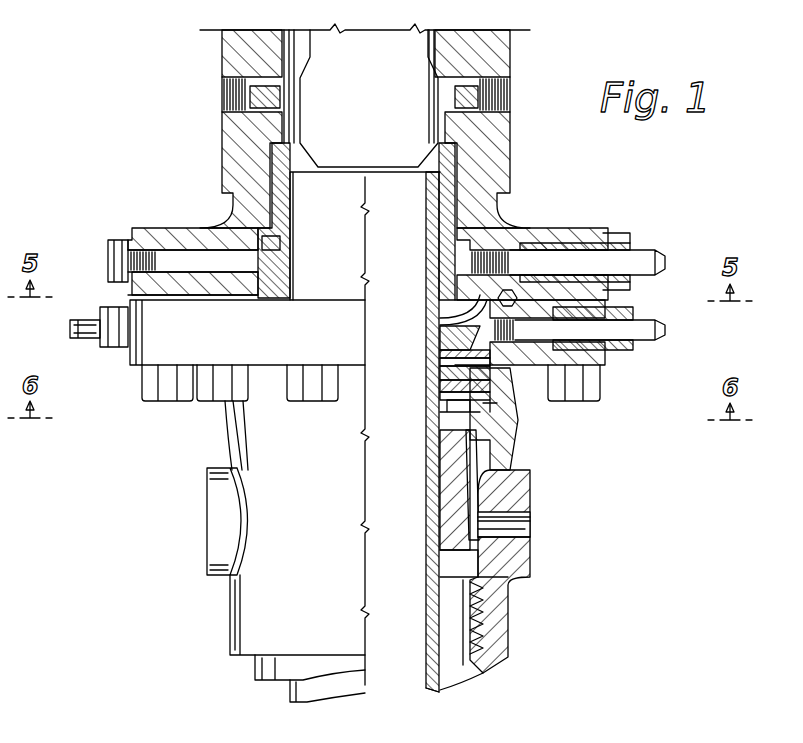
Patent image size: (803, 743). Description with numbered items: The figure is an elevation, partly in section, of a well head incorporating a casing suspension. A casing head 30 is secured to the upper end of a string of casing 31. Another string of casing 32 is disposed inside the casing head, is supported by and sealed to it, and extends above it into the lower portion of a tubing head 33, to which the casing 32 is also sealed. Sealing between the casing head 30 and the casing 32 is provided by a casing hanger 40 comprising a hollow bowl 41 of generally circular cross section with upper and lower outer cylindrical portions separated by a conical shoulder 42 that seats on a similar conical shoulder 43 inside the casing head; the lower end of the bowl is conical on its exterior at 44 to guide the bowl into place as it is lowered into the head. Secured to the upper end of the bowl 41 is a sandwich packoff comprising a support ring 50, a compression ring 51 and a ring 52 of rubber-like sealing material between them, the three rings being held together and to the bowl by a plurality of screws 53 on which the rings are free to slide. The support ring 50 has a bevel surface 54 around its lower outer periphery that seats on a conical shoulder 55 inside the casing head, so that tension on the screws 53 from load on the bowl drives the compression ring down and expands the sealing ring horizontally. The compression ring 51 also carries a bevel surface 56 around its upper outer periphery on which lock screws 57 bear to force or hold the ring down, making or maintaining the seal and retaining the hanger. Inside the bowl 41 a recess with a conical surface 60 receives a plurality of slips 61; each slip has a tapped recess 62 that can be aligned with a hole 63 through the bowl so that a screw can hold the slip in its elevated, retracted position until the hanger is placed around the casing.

The casing head 30 is at (228, 441).
The string of casing 31 is at (483, 672).
The string of casing 32 is at (440, 690).
The tubing head 33 is at (503, 153).
The casing hanger 40 is at (500, 414).
The hollow bowl 41 is at (487, 426).
The conical shoulder 42 is at (455, 488).
The conical shoulder 43 is at (513, 500).
The conical lower end 44 is at (487, 547).
The support ring 50 is at (443, 387).
The compression ring 51 is at (432, 363).
The ring of sealing material 52 is at (433, 377).
The screws 53 is at (437, 327).
The bevel surface 54 is at (443, 393).
The conical shoulder 55 is at (490, 404).
The bevel surface 56 is at (435, 350).
The lock screws 57 is at (432, 307).
The conical surface 60 is at (512, 525).
The slips 61 is at (448, 525).
The tapped recess 62 is at (467, 453).
The hole 63 is at (487, 440).